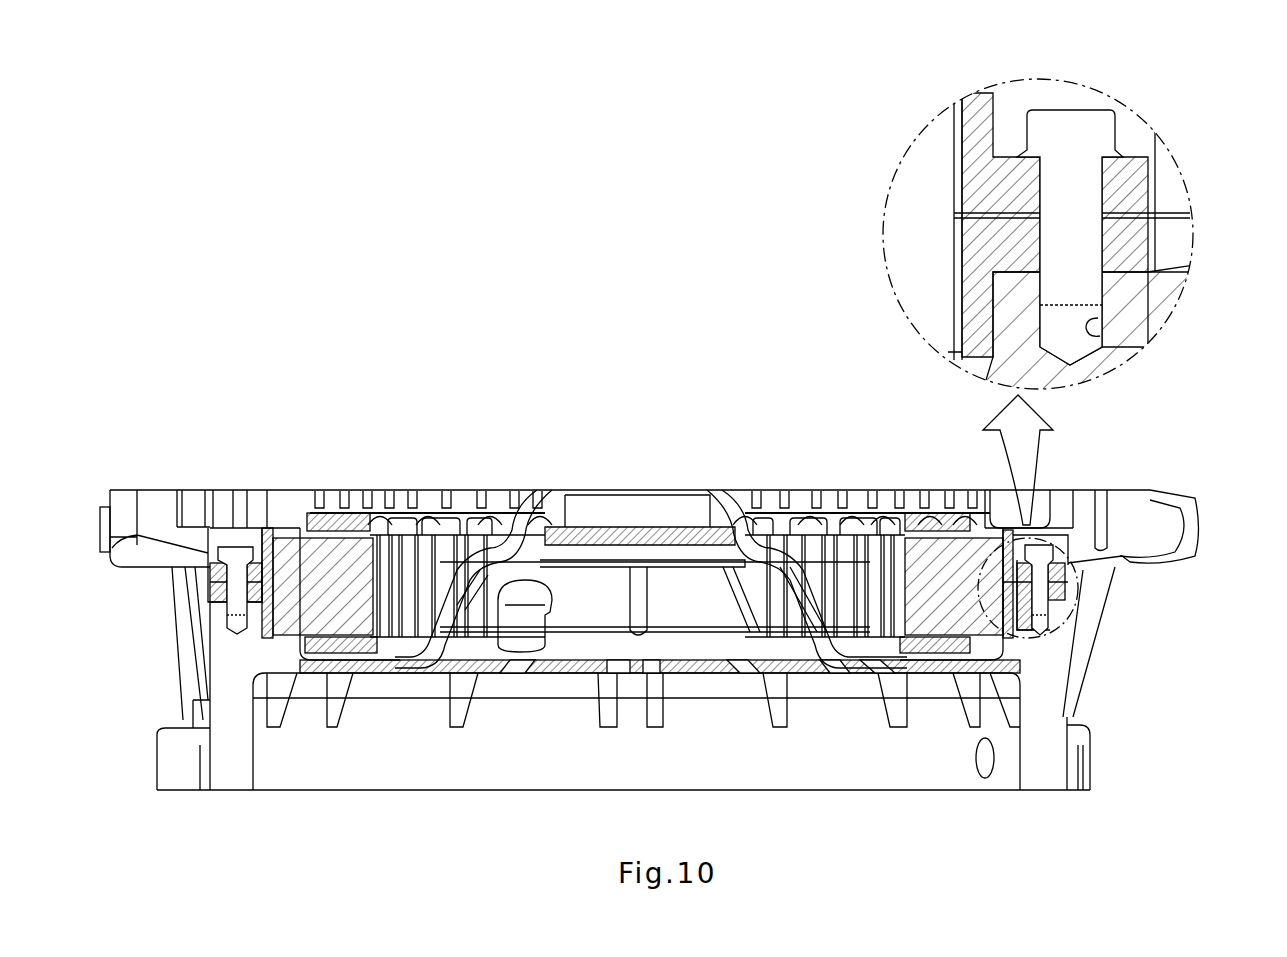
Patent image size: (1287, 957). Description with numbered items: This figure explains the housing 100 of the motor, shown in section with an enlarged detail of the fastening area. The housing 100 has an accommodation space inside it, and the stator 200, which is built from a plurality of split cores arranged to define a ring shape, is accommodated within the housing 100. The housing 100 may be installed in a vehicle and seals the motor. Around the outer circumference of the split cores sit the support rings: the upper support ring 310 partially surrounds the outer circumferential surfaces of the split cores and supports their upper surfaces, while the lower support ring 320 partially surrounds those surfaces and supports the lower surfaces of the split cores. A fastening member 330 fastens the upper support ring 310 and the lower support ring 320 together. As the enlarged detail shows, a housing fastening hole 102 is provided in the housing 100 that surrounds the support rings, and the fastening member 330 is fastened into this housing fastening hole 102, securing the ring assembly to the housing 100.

The housing 100 is at (1077, 306).
The housing fastening hole 102 is at (1093, 327).
The stator 200 is at (853, 488).
The upper support ring 310 is at (1008, 145).
The lower support ring 320 is at (968, 370).
The fastening member 330 is at (1070, 128).